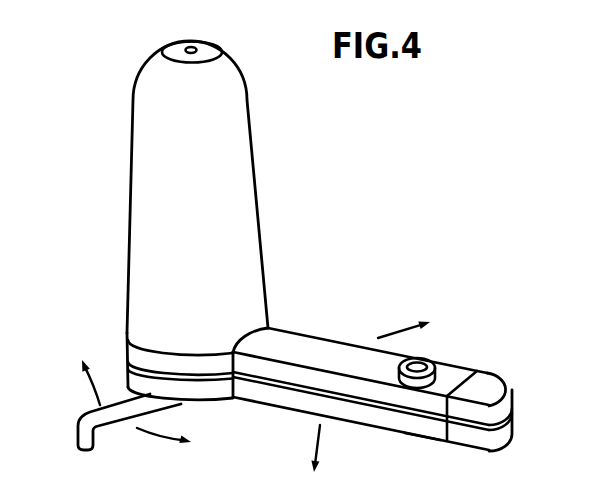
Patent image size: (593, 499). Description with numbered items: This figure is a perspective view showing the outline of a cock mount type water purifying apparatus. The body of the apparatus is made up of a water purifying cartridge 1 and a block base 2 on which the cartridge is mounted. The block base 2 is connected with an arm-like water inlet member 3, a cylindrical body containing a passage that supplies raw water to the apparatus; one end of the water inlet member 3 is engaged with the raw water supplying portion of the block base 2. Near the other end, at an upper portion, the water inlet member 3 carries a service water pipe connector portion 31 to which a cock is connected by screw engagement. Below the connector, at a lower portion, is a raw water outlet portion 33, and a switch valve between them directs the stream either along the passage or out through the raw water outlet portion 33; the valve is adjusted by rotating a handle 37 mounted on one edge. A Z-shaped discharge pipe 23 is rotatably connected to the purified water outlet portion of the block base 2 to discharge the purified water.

The water purifying cartridge 1 is at (121, 87).
The block base 2 is at (117, 348).
The water inlet member 3 is at (306, 327).
The Z-shaped discharge pipe 23 is at (78, 425).
The service water pipe connector portion 31 is at (433, 355).
The raw water outlet portion 33 is at (422, 442).
The handle 37 is at (485, 385).